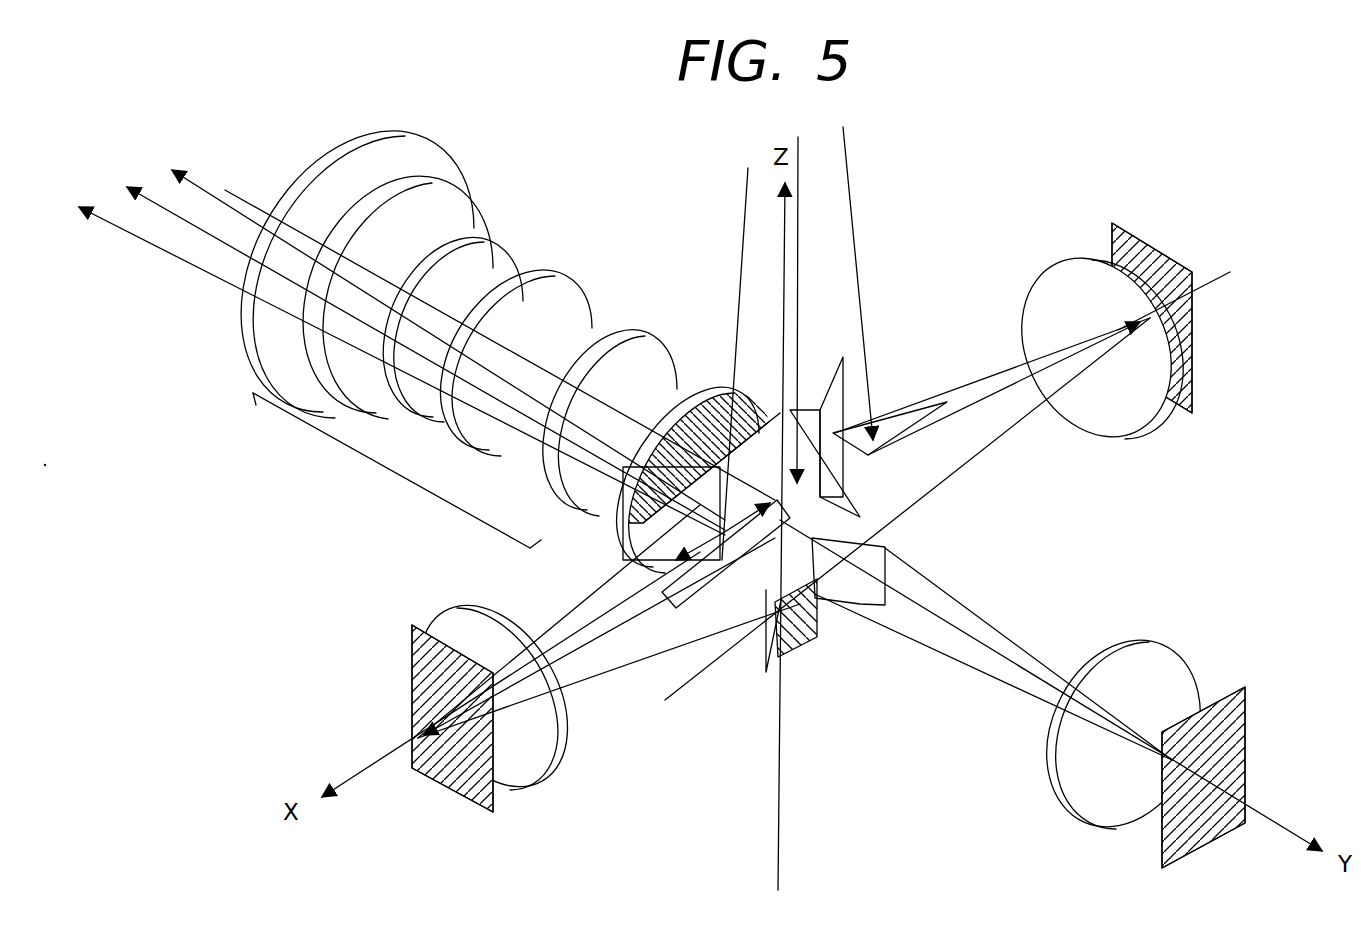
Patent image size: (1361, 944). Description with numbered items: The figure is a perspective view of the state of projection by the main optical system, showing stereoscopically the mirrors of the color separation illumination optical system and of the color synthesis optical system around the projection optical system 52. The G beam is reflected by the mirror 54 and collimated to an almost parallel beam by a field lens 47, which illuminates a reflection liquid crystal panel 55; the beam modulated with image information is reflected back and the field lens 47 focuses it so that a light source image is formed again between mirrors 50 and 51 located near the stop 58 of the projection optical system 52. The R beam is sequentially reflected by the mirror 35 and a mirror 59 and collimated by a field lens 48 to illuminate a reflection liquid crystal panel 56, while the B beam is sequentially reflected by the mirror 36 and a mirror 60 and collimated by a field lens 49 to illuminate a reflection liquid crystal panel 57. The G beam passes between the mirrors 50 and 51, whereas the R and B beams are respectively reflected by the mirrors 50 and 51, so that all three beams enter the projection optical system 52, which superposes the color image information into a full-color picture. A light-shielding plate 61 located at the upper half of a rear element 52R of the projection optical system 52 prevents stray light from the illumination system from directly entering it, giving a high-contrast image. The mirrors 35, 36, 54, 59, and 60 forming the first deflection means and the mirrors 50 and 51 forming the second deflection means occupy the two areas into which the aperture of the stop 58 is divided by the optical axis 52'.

The mirror 35 is at (907, 430).
The mirror 36 is at (693, 572).
The field lens 47 is at (1176, 672).
The field lens 48 is at (1053, 275).
The field lens 49 is at (453, 620).
The mirror 50 is at (876, 563).
The mirror 51 is at (767, 640).
The projection optical system 52 is at (459, 339).
The optical axis 52' is at (994, 654).
The rear element 52R is at (633, 566).
The mirror 54 is at (797, 400).
The reflection liquid crystal panel 55 is at (1245, 712).
The reflection liquid crystal panel 56 is at (1112, 237).
The reflection liquid crystal panel 57 is at (422, 650).
The stop 58 is at (800, 650).
The mirror 59 is at (847, 383).
The mirror 60 is at (623, 549).
The light-shielding plate 61 is at (758, 396).